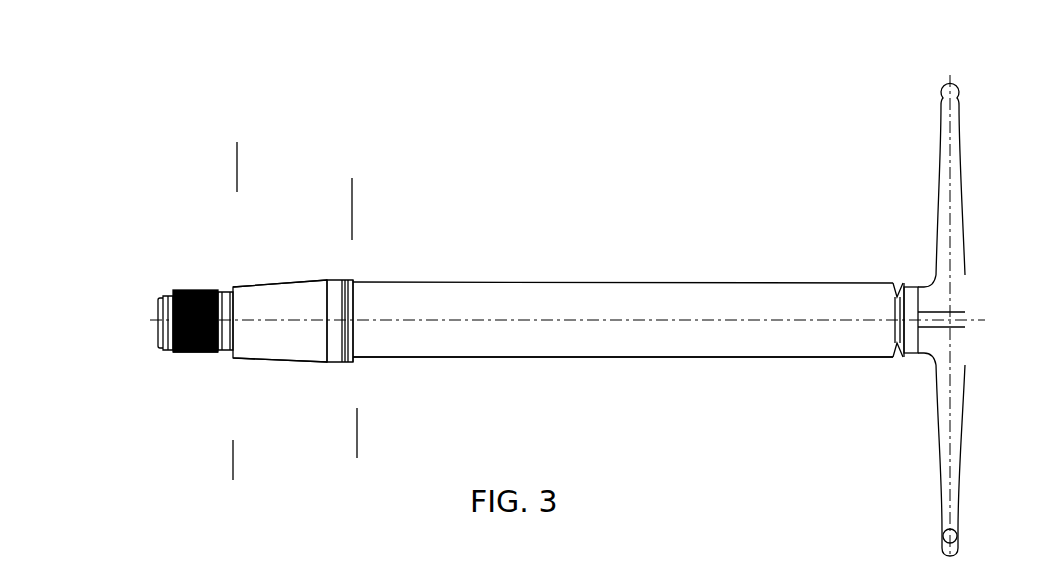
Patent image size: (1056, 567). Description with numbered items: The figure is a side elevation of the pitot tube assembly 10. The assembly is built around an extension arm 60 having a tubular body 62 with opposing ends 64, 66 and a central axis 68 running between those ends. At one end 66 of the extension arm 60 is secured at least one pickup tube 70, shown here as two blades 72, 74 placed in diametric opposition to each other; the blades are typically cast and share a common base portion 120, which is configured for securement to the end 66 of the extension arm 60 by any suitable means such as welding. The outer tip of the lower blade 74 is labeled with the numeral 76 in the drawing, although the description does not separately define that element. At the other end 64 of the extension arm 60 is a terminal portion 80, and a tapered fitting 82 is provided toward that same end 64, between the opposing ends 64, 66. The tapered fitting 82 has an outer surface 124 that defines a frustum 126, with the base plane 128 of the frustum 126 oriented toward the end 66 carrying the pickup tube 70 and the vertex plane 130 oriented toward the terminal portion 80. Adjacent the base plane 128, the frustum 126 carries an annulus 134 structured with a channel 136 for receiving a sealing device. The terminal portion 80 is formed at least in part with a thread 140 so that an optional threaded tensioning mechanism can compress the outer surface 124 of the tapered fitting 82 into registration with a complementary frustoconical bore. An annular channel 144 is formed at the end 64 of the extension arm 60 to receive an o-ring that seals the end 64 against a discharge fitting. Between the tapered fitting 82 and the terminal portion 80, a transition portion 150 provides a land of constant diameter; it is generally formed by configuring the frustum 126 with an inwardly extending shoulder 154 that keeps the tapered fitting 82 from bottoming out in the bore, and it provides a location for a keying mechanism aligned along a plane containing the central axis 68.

The pitot tube assembly 10 is at (556, 237).
The extension arm 60 is at (655, 283).
The tubular body 62 is at (647, 357).
The end of the extension arm 64 is at (157, 307).
The end of the extension arm 66 is at (898, 285).
The central axis 68 is at (762, 320).
The pickup tube 70 is at (982, 321).
The blade 72 is at (958, 170).
The blade 74 is at (960, 468).
The end cap 76 is at (958, 535).
The terminal portion 80 is at (196, 288).
The tapered fitting 82 is at (278, 282).
The common base portion 120 is at (895, 355).
The outer surface 124 is at (270, 345).
The frustum 126 is at (292, 362).
The base plane 128 is at (355, 190).
The vertex plane 130 is at (239, 152).
The annulus 134 is at (353, 278).
The channel 136 is at (332, 362).
The thread 140 is at (192, 352).
The annular channel 144 is at (170, 295).
The transition portion 150 is at (225, 290).
The inwardly extending shoulder 154 is at (232, 355).